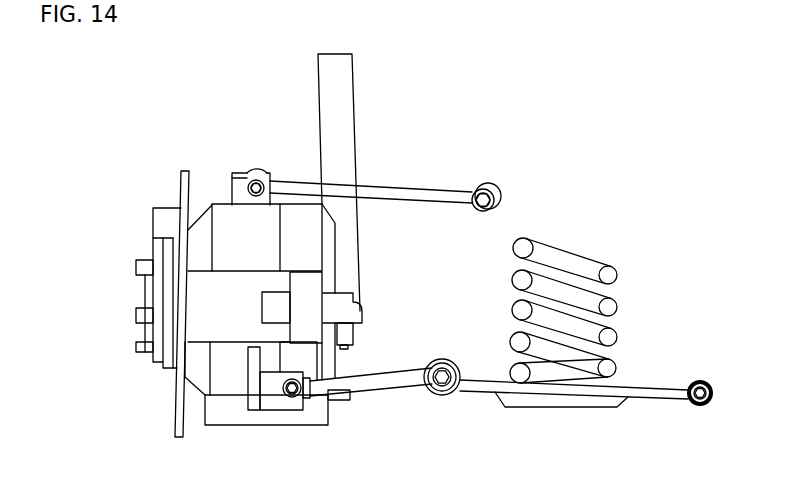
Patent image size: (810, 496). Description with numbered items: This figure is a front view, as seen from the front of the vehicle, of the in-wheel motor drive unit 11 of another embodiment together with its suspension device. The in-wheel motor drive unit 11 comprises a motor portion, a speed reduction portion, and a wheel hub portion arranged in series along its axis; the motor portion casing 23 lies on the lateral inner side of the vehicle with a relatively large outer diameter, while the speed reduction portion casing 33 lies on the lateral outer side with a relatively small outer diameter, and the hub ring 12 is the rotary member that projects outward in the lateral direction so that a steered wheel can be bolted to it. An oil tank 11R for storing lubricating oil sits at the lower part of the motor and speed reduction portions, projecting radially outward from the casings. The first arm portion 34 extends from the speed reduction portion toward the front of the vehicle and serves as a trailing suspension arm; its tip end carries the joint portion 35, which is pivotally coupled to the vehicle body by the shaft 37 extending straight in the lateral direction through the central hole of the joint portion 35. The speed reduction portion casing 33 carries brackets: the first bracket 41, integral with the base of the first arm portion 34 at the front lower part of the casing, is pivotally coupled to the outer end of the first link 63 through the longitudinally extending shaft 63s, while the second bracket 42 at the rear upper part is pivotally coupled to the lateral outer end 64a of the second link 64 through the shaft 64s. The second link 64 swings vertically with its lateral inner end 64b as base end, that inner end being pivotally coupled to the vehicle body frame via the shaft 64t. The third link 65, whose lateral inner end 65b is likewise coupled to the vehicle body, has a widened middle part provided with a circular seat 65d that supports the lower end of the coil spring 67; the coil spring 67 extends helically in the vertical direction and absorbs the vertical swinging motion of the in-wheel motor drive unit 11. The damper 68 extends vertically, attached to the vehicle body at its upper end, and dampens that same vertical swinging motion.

The in-wheel motor drive unit 11 is at (312, 430).
The oil tank 11R is at (245, 420).
The hub ring 12 is at (150, 250).
The motor portion casing 23 is at (303, 242).
The speed reduction portion casing 33 is at (198, 380).
The first arm portion 34 is at (273, 283).
The joint portion 35 is at (317, 288).
The shaft 37 is at (357, 313).
The first bracket 41 is at (277, 402).
The second bracket 42 is at (238, 187).
The first link 63 is at (383, 385).
The shaft 63s is at (292, 398).
The second link 64 is at (380, 190).
The lateral outer end 64a is at (253, 172).
The shaft 64s is at (262, 182).
The shaft 64t is at (473, 187).
The lateral inner end 64b is at (493, 187).
The third link 65 is at (662, 398).
The lateral inner end 65b is at (700, 382).
The circular seat 65d is at (580, 398).
The coil spring 67 is at (588, 266).
The damper 68 is at (343, 142).